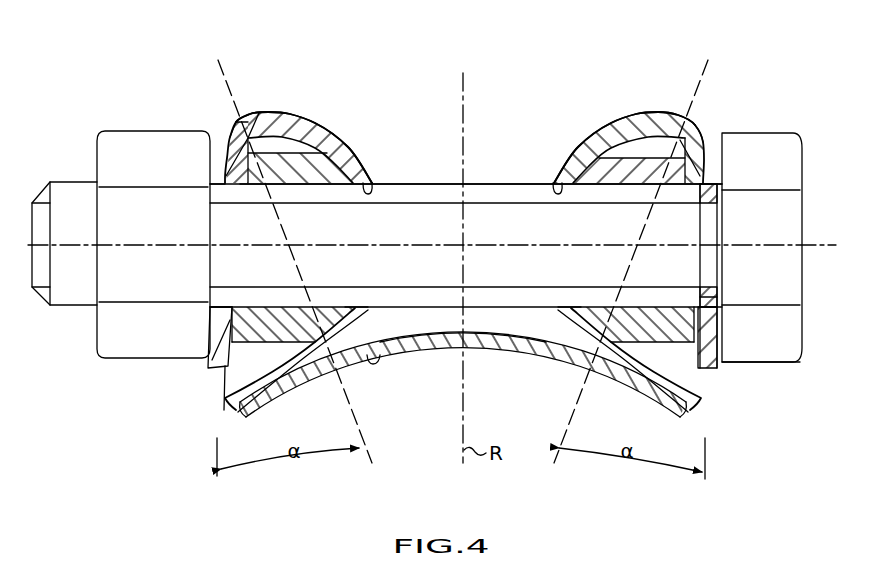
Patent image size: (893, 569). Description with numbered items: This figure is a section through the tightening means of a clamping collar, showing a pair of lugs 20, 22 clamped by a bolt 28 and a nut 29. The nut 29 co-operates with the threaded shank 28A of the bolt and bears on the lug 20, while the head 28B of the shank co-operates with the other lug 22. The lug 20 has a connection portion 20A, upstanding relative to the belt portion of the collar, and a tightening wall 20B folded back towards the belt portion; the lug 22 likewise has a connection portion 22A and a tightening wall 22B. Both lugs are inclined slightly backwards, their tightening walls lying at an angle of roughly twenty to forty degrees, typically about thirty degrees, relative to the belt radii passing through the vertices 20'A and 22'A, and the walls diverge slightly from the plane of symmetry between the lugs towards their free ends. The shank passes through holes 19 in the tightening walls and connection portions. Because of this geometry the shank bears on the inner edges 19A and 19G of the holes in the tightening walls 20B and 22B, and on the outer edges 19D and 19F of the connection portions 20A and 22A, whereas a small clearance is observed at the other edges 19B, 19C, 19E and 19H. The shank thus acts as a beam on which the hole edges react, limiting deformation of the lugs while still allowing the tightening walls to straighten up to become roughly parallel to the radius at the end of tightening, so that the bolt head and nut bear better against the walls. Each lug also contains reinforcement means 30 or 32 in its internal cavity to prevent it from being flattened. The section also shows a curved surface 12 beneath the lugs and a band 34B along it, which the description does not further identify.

The spherical surface 12 is at (495, 348).
The holes 19 is at (722, 183).
The inner edge 19A is at (214, 305).
The edge 19B is at (213, 182).
The edge 19C is at (357, 310).
The outer edge 19D is at (369, 180).
The edge 19E is at (563, 306).
The outer edge 19F is at (557, 182).
The inner edge 19G is at (705, 297).
The edge 19H is at (687, 188).
The lug 20 is at (298, 105).
The connection portion 20A is at (331, 138).
The tightening wall 20B is at (225, 150).
The vertex 20'A is at (259, 100).
The lug 22 is at (629, 105).
The connection portion 22A is at (598, 140).
The tightening wall 22B is at (697, 153).
The vertex 22'A is at (672, 102).
The bolt 28 is at (482, 182).
The threaded shank 28A is at (418, 184).
The head 28B is at (770, 363).
The nut 29 is at (160, 142).
The reinforcement means 30 is at (278, 323).
The reinforcement means 32 is at (647, 327).
The spherical seat band 34B is at (396, 341).